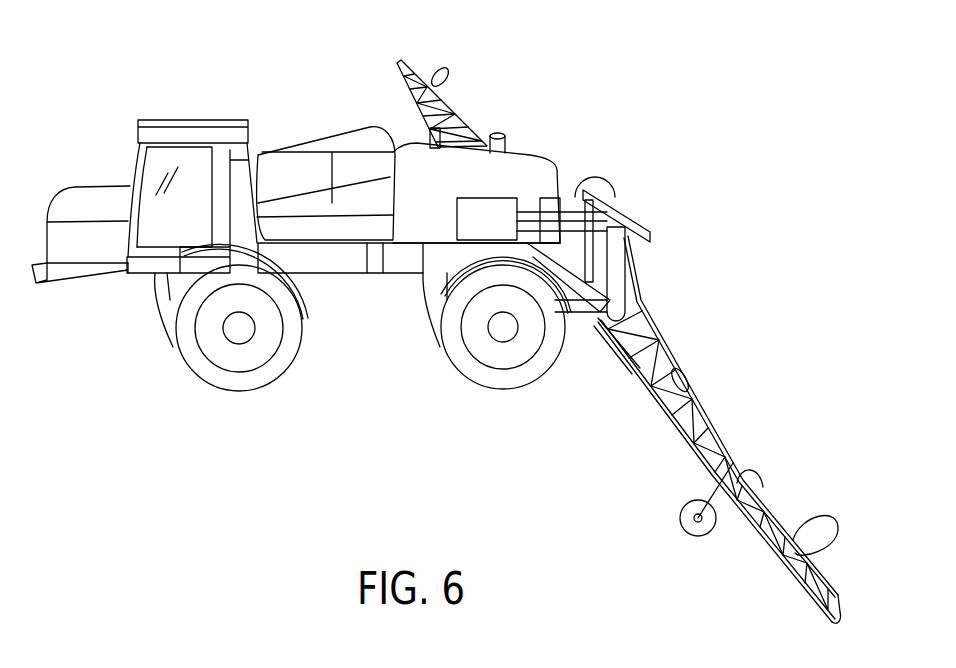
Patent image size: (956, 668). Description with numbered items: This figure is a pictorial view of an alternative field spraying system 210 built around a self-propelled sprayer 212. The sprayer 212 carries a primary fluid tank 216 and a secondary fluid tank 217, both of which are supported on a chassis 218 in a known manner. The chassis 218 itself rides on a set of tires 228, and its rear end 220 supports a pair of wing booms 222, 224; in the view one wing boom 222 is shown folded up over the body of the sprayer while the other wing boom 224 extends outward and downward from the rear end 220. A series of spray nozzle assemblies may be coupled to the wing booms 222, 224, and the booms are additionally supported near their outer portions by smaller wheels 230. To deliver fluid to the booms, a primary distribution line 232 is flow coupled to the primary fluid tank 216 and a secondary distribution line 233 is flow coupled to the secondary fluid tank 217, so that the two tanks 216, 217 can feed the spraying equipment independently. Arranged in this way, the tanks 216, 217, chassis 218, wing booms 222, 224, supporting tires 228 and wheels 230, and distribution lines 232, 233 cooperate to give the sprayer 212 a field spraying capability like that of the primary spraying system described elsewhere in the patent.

The field spraying system 210 is at (263, 107).
The self-propelled sprayer 212 is at (118, 212).
The primary fluid tank 216 is at (537, 170).
The secondary fluid tank 217 is at (567, 202).
The chassis 218 is at (348, 263).
The rear end 220 is at (585, 310).
The wing boom 222 is at (453, 104).
The wing boom 224 is at (697, 385).
The tires 228 is at (180, 344).
The smaller wheels 230 is at (700, 530).
The primary distribution line 232 is at (638, 278).
The secondary distribution line 233 is at (433, 135).